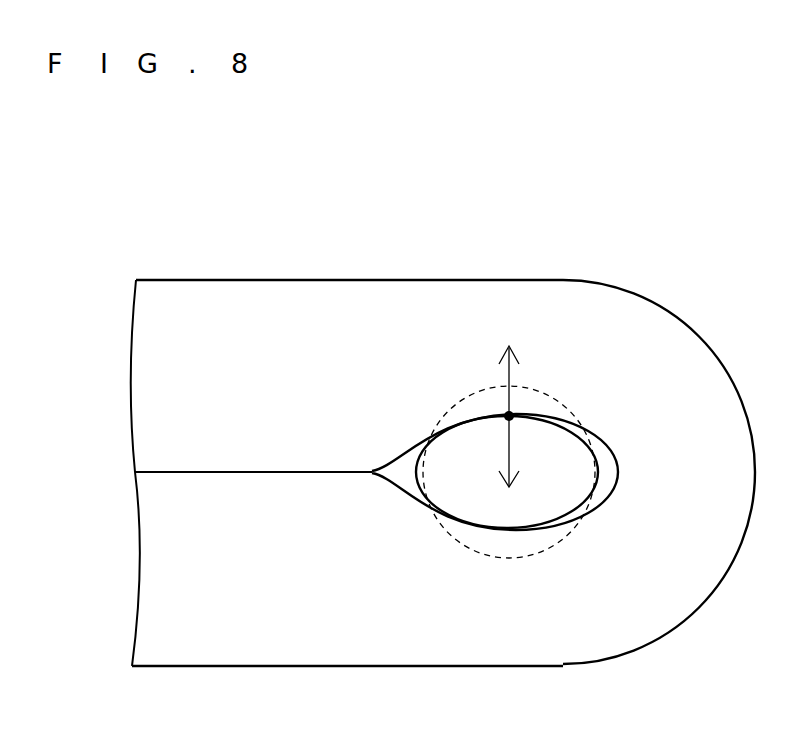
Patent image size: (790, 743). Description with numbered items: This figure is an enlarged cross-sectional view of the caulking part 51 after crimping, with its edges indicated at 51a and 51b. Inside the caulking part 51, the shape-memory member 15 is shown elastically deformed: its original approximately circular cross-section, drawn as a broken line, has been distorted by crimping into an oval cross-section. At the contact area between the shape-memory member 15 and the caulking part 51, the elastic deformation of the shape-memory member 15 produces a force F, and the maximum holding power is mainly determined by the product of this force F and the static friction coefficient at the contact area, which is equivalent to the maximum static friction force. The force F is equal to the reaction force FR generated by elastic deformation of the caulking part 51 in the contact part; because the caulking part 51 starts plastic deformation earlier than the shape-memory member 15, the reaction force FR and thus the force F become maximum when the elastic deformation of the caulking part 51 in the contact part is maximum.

The caulking part 51 is at (332, 303).
The upper edge of blade member 51a is at (173, 303).
The lower edge of blade member 51b is at (173, 637).
The shape-memory member 15 is at (416, 468).
The force F is at (509, 374).
The reaction force FR is at (510, 456).